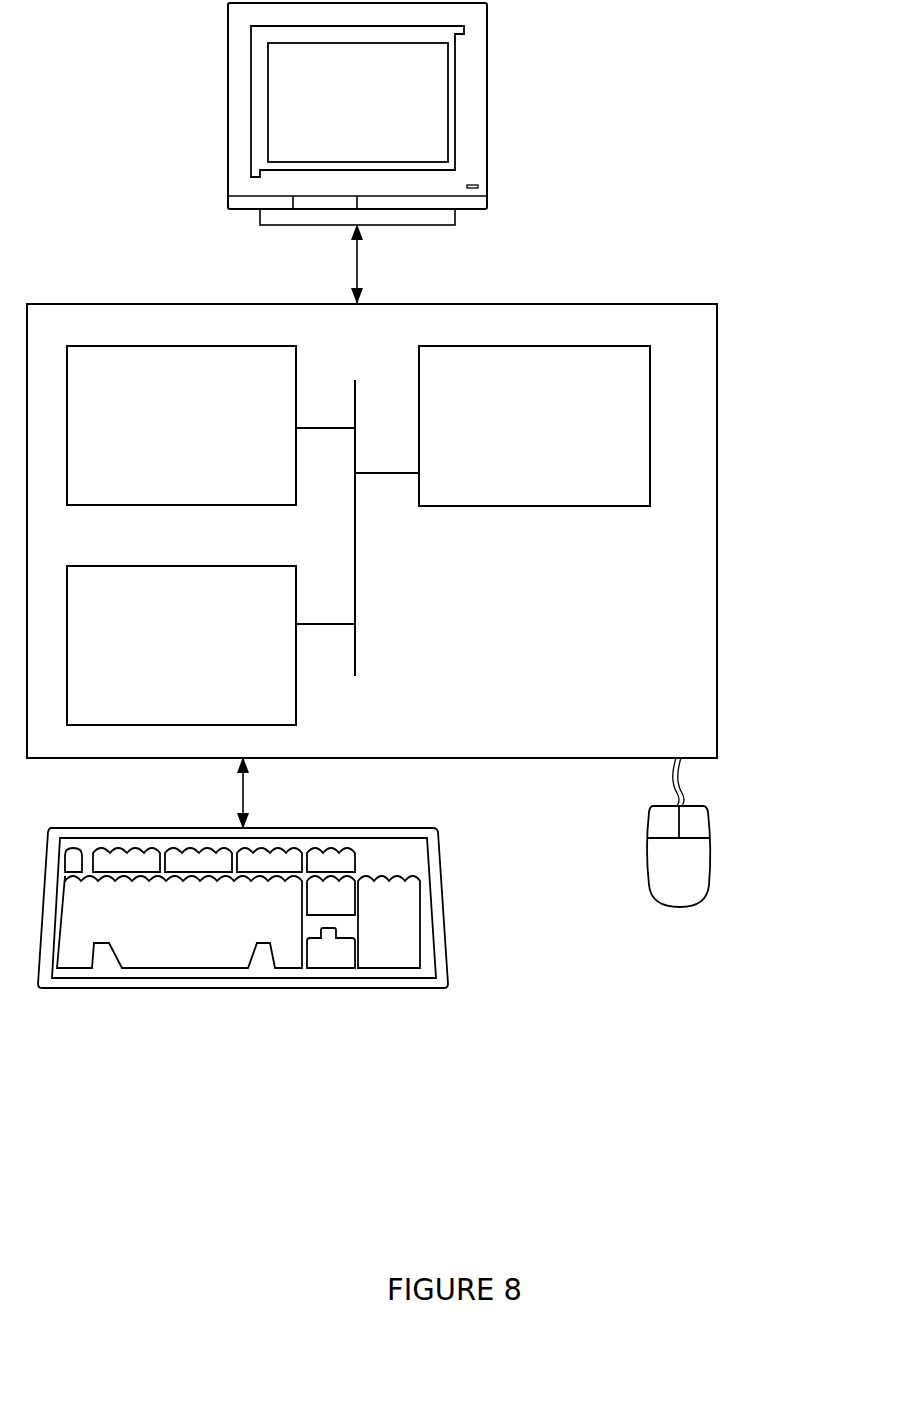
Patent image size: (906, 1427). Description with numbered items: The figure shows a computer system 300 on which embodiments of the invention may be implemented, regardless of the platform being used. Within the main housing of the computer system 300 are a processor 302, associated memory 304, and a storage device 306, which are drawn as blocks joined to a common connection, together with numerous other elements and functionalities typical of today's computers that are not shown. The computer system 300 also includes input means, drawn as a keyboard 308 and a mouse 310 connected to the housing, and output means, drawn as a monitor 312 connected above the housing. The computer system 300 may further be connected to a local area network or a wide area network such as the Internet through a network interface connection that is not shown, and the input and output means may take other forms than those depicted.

The computer system 300 is at (692, 173).
The processor 302 is at (574, 438).
The memory 304 is at (205, 439).
The storage device 306 is at (201, 658).
The keyboard 308 is at (195, 945).
The mouse 310 is at (701, 880).
The monitor 312 is at (377, 117).